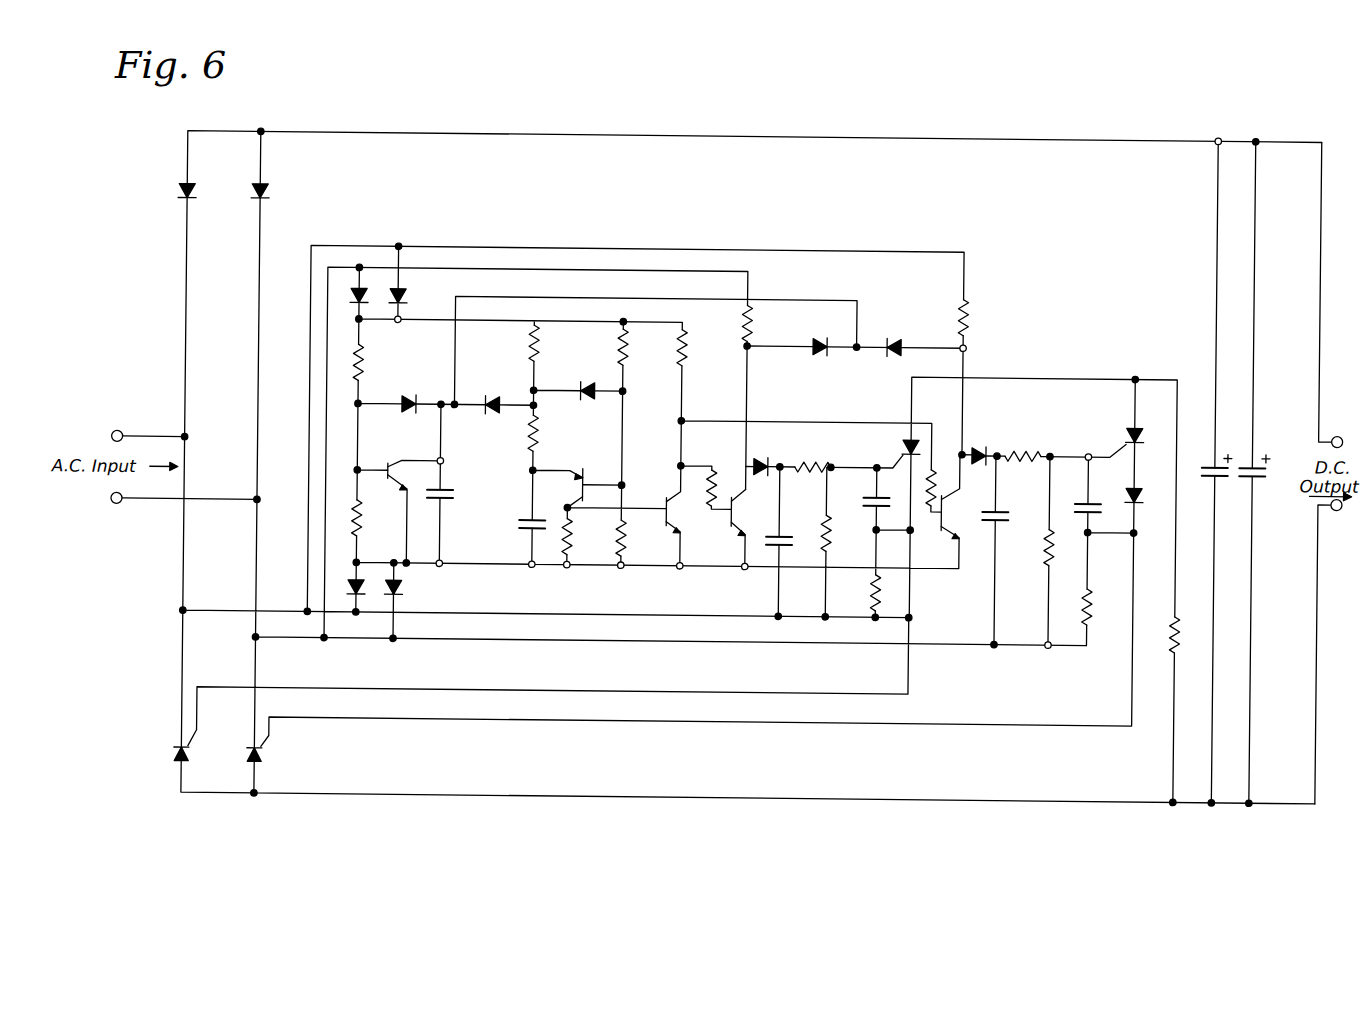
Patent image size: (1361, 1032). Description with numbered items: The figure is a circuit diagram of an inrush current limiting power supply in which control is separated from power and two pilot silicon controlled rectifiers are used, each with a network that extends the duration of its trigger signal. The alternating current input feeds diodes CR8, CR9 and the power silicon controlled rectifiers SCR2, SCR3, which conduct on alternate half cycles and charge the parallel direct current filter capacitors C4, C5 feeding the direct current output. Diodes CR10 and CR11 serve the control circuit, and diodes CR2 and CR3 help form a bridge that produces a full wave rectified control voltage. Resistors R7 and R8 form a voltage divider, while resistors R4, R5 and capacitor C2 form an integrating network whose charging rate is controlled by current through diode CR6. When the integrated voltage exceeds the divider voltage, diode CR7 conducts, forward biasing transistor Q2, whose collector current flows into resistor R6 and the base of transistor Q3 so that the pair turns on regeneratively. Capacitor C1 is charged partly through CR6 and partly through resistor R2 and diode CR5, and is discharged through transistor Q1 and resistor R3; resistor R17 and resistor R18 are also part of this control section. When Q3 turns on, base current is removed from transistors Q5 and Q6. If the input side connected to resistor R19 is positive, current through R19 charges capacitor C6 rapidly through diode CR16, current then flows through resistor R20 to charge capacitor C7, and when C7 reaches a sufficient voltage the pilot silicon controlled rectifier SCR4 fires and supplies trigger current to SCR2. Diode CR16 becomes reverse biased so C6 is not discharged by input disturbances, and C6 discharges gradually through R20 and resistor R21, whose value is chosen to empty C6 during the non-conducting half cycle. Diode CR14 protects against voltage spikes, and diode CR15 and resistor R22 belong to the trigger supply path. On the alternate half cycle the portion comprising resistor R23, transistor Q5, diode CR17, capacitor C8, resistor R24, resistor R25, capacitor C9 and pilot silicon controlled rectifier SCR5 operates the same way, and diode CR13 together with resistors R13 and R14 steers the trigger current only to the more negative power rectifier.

The diode CR8 is at (184, 186).
The diode CR9 is at (260, 186).
The diode CR2 is at (357, 290).
The diode CR3 is at (396, 290).
The resistor R2 is at (361, 370).
The diode CR5 is at (410, 400).
The transistor Q1 is at (388, 465).
The resistor R3 is at (362, 533).
The capacitor C1 is at (448, 504).
The diode CR10 is at (352, 588).
The diode CR11 is at (402, 590).
The power silicon controlled rectifier SCR2 is at (180, 760).
The power silicon controlled rectifier SCR3 is at (258, 760).
The diode CR6 is at (502, 386).
The resistor R4 is at (538, 352).
The diode CR7 is at (596, 372).
The resistor R7 is at (627, 352).
The resistor R17 is at (686, 350).
The resistor R5 is at (538, 446).
The transistor Q2 is at (600, 460).
The capacitor C2 is at (524, 532).
The resistor R6 is at (571, 540).
The resistor R8 is at (626, 532).
The transistor Q3 is at (667, 497).
The resistor R18 is at (714, 474).
The transistor Q5 is at (732, 522).
The resistor R19 is at (751, 318).
The diode CR14 is at (815, 350).
The diode CR15 is at (910, 326).
The resistor R23 is at (968, 318).
The diode CR16 is at (760, 462).
The resistor R20 is at (812, 462).
The pilot silicon controlled rectifier SCR4 is at (906, 442).
The capacitor C6 is at (782, 533).
The resistor R21 is at (822, 538).
The capacitor C9 is at (870, 500).
The resistor R13 is at (872, 595).
The resistor R22 is at (934, 470).
The transistor Q6 is at (942, 526).
The diode CR17 is at (975, 448).
The resistor R24 is at (1024, 452).
The pilot silicon controlled rectifier SCR5 is at (1130, 424).
The diode CR13 is at (1140, 488).
The capacitor C8 is at (999, 508).
The capacitor C7 is at (1082, 500).
The resistor R25 is at (1046, 556).
The resistor R14 is at (1093, 626).
The filter capacitor C4 is at (1218, 476).
The filter capacitor C5 is at (1256, 476).